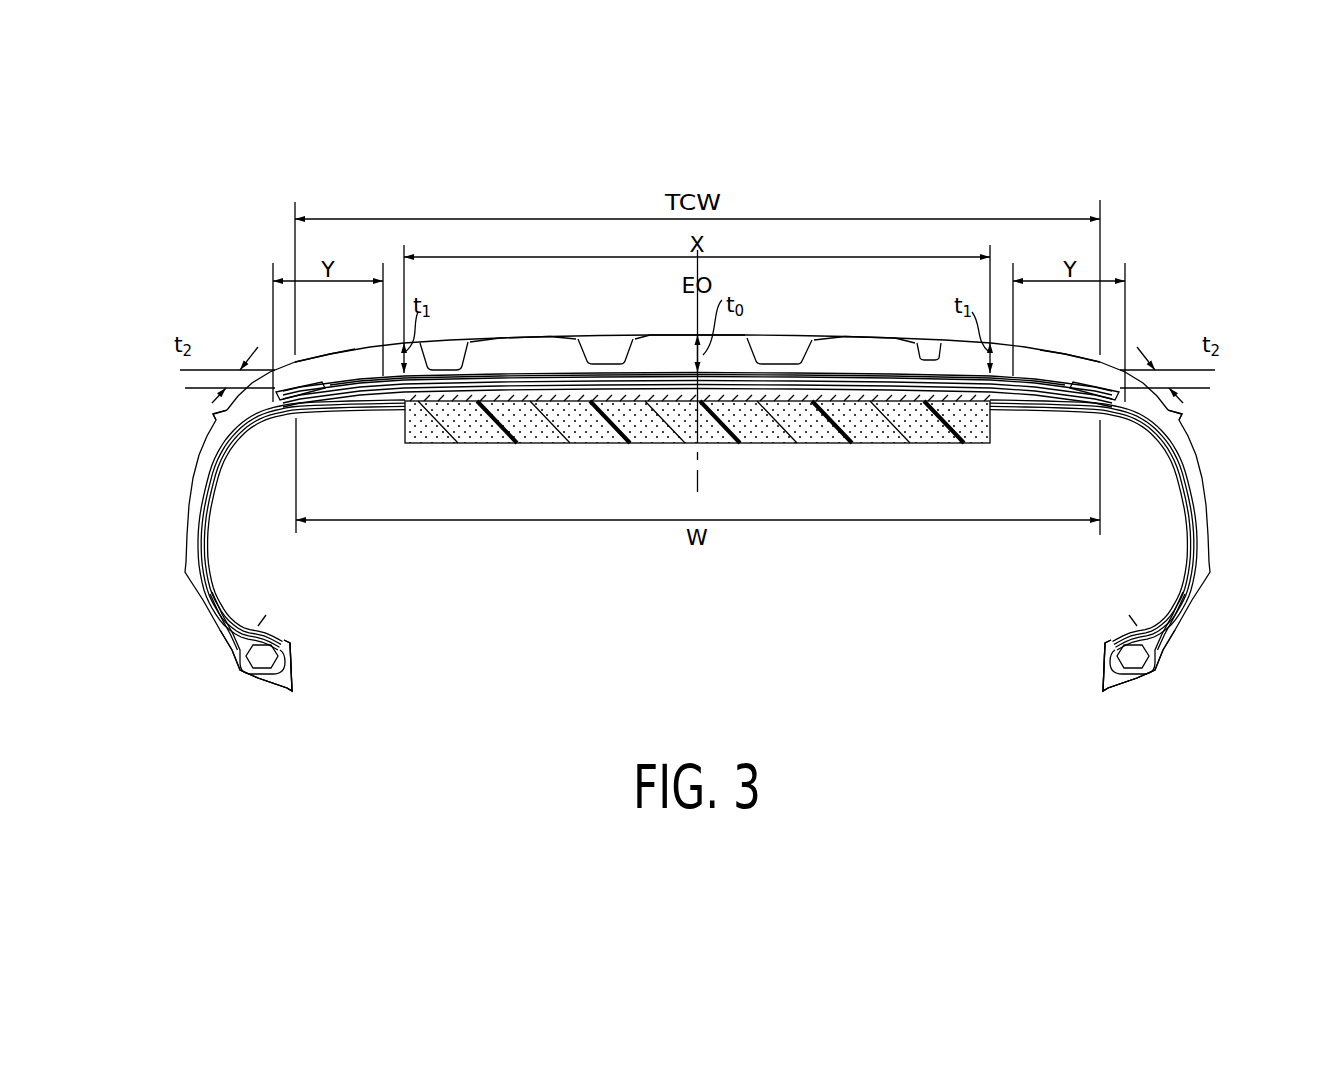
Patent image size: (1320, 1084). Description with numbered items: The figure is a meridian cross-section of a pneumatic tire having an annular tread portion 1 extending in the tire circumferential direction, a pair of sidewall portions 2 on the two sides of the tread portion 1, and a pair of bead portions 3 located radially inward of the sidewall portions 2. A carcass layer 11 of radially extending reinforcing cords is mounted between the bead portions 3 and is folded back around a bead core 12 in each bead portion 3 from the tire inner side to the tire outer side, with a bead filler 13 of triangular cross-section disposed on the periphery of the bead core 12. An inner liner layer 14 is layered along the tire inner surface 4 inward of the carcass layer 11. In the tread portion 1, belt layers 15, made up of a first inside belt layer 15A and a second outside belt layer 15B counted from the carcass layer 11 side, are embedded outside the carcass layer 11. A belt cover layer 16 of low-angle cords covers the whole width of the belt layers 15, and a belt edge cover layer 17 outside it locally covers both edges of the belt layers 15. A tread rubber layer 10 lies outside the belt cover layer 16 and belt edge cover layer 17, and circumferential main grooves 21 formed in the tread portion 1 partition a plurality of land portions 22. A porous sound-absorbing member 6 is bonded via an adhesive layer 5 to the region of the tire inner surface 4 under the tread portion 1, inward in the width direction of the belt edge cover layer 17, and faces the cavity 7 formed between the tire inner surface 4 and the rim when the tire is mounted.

The tread portion 1 is at (873, 343).
The sidewall portion 2 is at (193, 479).
The bead portion 3 is at (226, 642).
The tire inner surface 4 is at (342, 408).
The adhesive layer 5 is at (532, 403).
The sound-absorbing member 6 is at (653, 428).
The cavity 7 is at (913, 635).
The tread rubber layer 10 is at (852, 345).
The carcass layer 11 is at (1183, 446).
The bead core 12 is at (263, 655).
The bead filler 13 is at (256, 622).
The inner liner layer 14 is at (290, 656).
The belt layers 15 is at (697, 441).
The first inside belt layer 15A is at (362, 396).
The second outside belt layer 15B is at (388, 392).
The belt cover layer 16 is at (547, 380).
The belt edge cover layer 17 is at (322, 383).
The circumferential main groove 21 is at (455, 352).
The land portion 22 is at (503, 348).